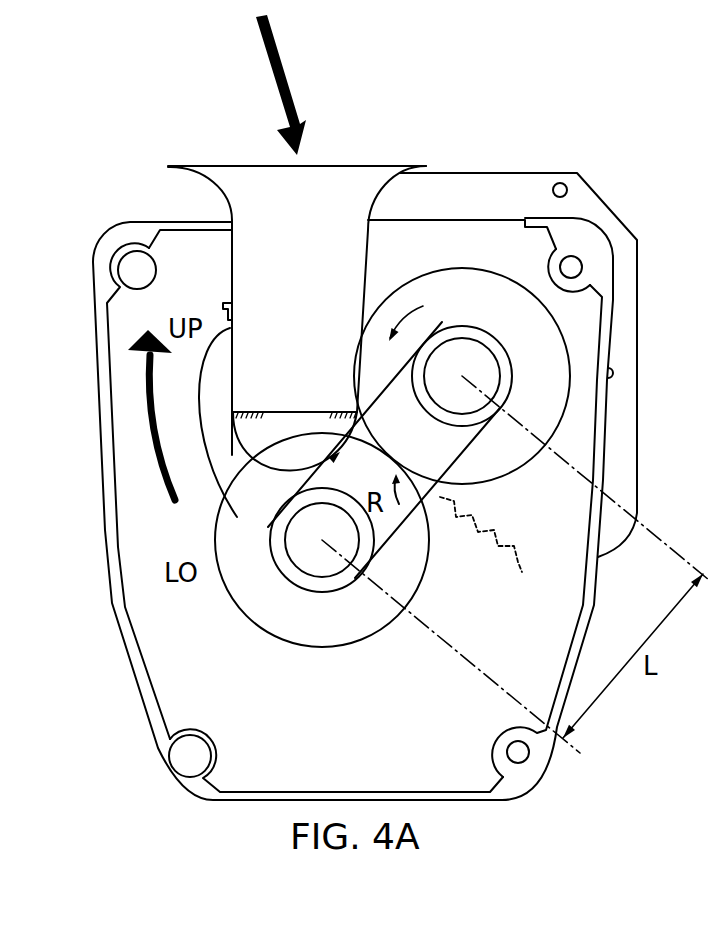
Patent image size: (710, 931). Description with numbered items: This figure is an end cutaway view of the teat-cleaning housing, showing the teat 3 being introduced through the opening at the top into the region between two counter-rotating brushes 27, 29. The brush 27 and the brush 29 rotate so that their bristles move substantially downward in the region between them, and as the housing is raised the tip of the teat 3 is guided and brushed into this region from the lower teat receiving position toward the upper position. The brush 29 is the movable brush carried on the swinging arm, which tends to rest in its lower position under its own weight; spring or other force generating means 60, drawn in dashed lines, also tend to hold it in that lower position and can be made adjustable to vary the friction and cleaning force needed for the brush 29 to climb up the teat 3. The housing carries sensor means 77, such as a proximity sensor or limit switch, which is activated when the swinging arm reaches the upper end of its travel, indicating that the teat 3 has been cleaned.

The teat 3 is at (361, 183).
The brush 27 is at (537, 335).
The brush 29 is at (243, 600).
The force generating means 60 is at (524, 546).
The sensor means 77 is at (226, 301).